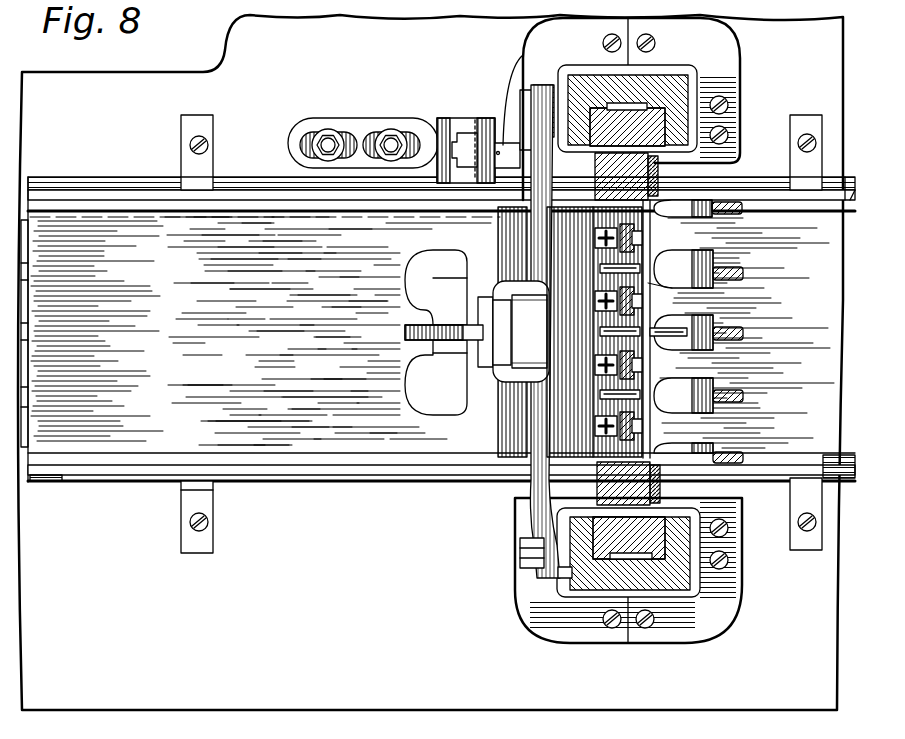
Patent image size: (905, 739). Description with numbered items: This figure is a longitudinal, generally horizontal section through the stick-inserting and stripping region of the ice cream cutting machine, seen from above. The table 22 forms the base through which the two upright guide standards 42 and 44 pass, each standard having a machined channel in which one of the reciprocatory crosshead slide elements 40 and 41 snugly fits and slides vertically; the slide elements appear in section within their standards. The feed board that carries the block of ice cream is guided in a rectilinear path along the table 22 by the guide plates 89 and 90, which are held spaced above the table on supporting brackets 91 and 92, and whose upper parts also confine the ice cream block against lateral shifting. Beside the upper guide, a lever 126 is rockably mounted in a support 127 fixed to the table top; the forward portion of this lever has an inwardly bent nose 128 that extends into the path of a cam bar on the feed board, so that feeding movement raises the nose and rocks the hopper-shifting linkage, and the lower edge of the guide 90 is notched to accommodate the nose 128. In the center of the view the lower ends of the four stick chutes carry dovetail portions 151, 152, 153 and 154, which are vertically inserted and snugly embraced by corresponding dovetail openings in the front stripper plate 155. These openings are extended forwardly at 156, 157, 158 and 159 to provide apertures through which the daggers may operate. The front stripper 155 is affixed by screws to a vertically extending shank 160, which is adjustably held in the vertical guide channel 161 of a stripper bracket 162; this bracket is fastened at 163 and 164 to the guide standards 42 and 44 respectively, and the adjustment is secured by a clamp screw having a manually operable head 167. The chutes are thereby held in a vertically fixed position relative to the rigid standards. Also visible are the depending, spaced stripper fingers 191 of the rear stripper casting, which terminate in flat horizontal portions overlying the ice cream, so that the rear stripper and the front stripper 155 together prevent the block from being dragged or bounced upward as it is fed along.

The table 22 is at (430, 362).
The reciprocatory crosshead slide element 40 is at (657, 550).
The reciprocatory crosshead slide element 41 is at (603, 110).
The upright guide standard 42 is at (588, 573).
The upright guide standard 44 is at (677, 88).
The guide plate 89 is at (292, 462).
The guide plate 90 is at (230, 200).
The supporting bracket 91 is at (187, 548).
The supporting bracket 92 is at (190, 125).
The lever 126 is at (465, 147).
The support 127 is at (443, 123).
The inwardly bent nose 128 is at (523, 223).
The dovetail portion 151 is at (643, 443).
The dovetail portion 152 is at (648, 353).
The dovetail portion 153 is at (648, 283).
The dovetail portion 154 is at (637, 245).
The front stripper plate 155 is at (562, 417).
The forward extension of dovetail opening 156 is at (600, 432).
The forward extension of dovetail opening 157 is at (600, 367).
The forward extension of dovetail opening 158 is at (600, 305).
The forward extension of dovetail opening 159 is at (598, 243).
The vertically extending shank 160 is at (535, 331).
The vertical guide channel 161 is at (527, 295).
The stripper bracket 162 is at (533, 447).
The fastening of stripper bracket 163 is at (520, 556).
The fastening of stripper bracket 164 is at (520, 103).
The manually operable head 167 is at (440, 373).
The stripper fingers 191 is at (745, 272).